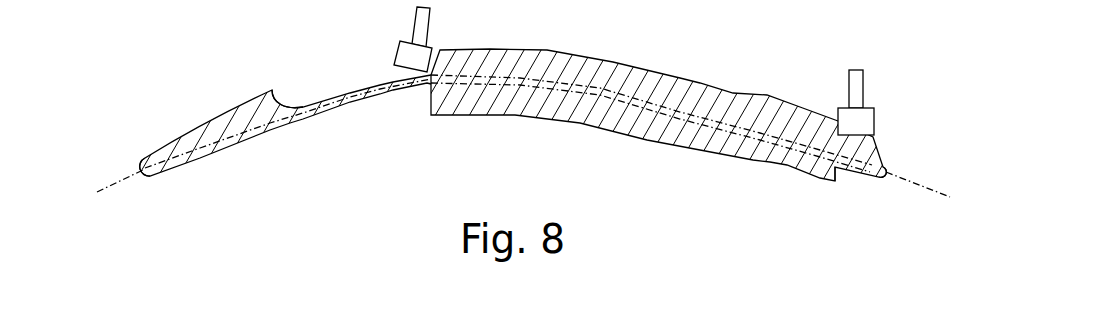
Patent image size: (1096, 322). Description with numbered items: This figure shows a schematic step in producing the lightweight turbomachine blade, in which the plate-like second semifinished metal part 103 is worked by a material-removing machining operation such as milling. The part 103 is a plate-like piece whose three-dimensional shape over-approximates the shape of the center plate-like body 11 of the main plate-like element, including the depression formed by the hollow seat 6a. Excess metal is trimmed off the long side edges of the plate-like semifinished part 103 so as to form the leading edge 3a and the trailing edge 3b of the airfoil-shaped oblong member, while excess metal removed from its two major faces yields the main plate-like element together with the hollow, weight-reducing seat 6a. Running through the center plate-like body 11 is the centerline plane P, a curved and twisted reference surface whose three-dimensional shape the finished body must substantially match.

The plate-like second semifinished metal part 103 is at (260, 128).
The hollow seat 6a is at (306, 98).
The leading edge 3a is at (134, 181).
The trailing edge 3b is at (898, 167).
The center plate-like body 11 is at (787, 130).
The centerline plane P is at (523, 184).